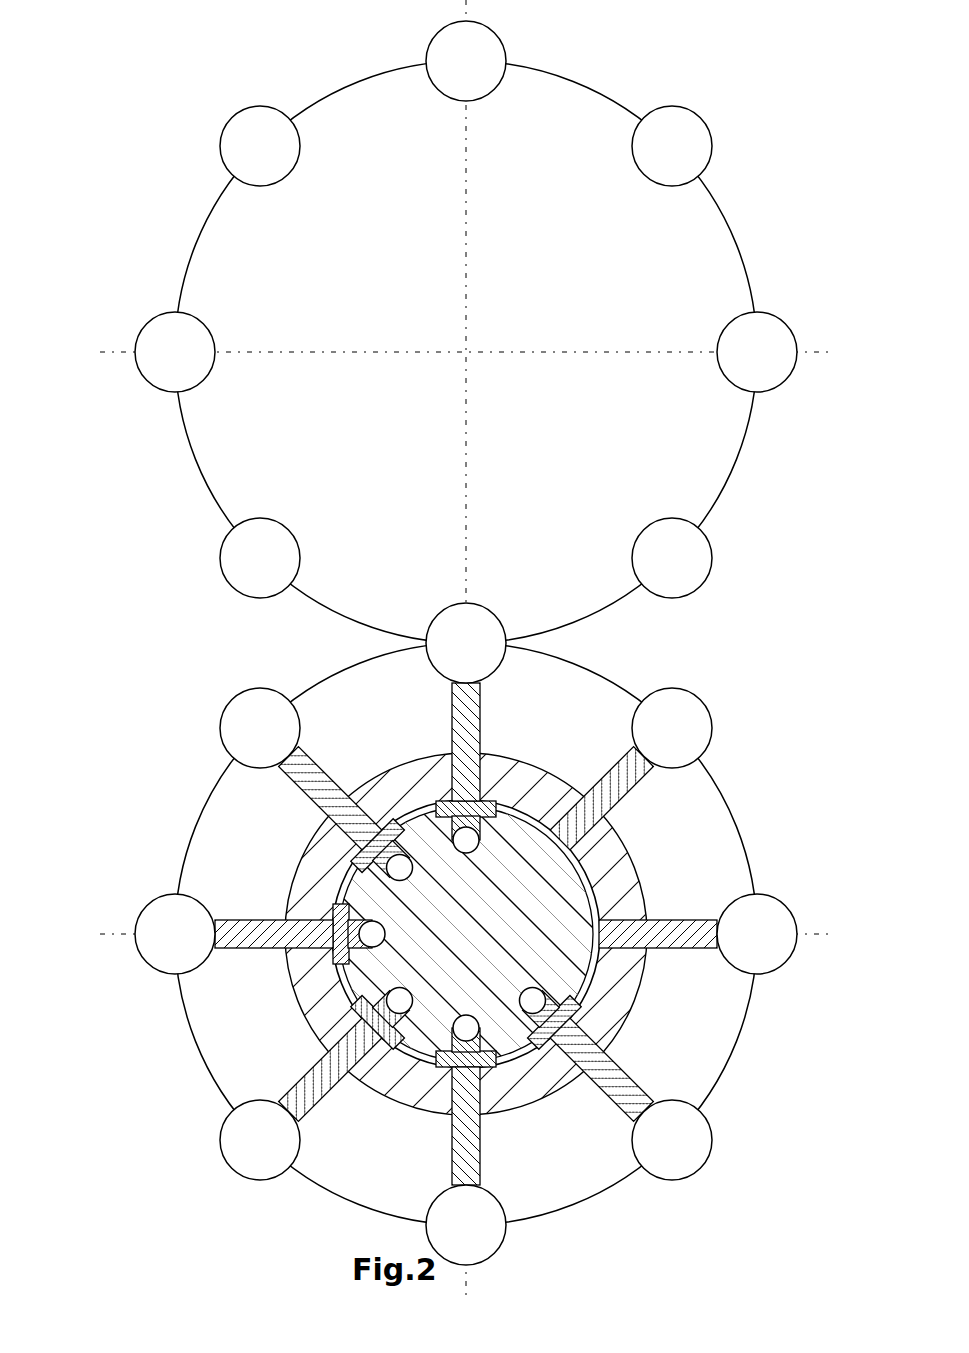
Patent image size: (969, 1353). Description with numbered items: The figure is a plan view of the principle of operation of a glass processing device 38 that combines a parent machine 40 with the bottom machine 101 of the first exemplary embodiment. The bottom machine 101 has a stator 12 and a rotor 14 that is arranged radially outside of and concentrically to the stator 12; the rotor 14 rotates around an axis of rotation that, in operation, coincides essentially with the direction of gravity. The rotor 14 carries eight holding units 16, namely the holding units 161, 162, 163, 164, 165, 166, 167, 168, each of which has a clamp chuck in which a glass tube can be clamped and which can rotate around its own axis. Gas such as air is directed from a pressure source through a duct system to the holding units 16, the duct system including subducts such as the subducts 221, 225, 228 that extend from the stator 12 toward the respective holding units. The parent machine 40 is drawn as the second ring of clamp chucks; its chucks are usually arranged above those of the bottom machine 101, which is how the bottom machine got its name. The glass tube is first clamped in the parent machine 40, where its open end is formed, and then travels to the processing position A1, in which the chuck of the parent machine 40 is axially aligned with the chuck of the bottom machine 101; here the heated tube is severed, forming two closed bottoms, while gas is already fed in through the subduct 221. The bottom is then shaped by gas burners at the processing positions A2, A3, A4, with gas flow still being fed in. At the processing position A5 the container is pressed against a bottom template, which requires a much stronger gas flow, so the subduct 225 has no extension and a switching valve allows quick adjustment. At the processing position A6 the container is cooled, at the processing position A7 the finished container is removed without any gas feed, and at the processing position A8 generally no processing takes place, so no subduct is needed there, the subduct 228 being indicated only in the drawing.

The glass processing device 38 is at (156, 126).
The parent machine 40 is at (786, 157).
The holding unit 16 is at (260, 558).
The rotor 14 is at (746, 1012).
The stator 12 is at (548, 906).
The bottom machine 101 is at (787, 766).
The first holding unit 161 is at (466, 643).
The second holding unit 162 is at (260, 728).
The third holding unit 163 is at (175, 934).
The fourth holding unit 164 is at (260, 1140).
The fifth holding unit 165 is at (466, 1225).
The sixth holding unit 166 is at (672, 1140).
The seventh holding unit 167 is at (757, 934).
The eighth holding unit 168 is at (672, 728).
The first subduct 221 is at (452, 736).
The fifth subduct 225 is at (483, 1138).
The eighth subduct 228 is at (640, 761).
The first processing position A1 is at (459, 737).
The second processing position A2 is at (286, 796).
The third processing position A3 is at (233, 965).
The fourth processing position A4 is at (330, 1119).
The fifth processing position A5 is at (507, 1175).
The sixth processing position A6 is at (651, 1090).
The seventh processing position A7 is at (714, 922).
The eighth processing position A8 is at (651, 779).